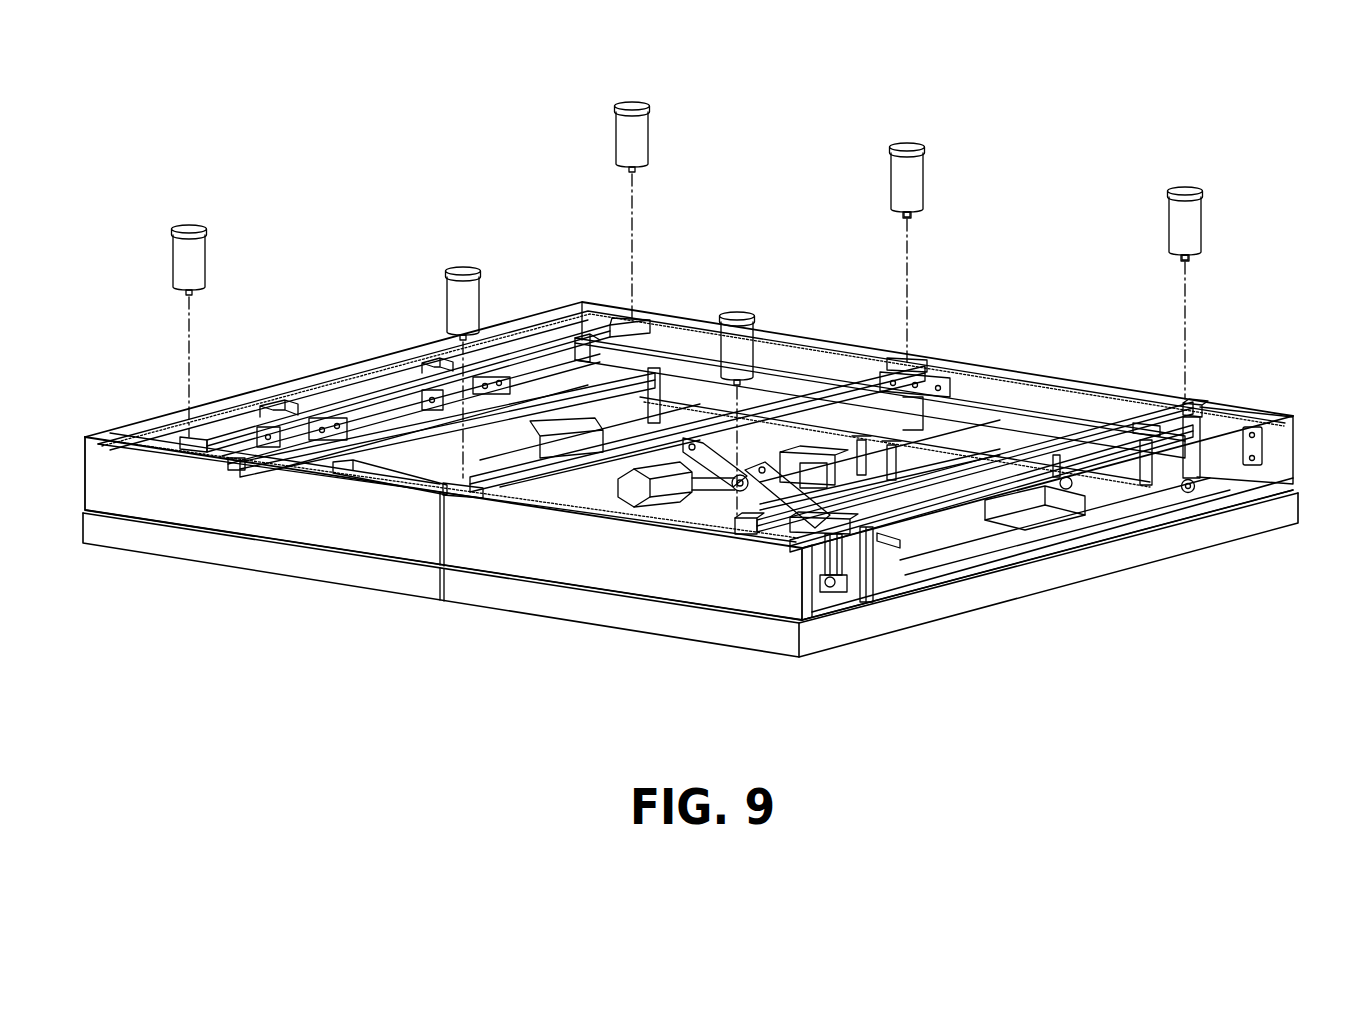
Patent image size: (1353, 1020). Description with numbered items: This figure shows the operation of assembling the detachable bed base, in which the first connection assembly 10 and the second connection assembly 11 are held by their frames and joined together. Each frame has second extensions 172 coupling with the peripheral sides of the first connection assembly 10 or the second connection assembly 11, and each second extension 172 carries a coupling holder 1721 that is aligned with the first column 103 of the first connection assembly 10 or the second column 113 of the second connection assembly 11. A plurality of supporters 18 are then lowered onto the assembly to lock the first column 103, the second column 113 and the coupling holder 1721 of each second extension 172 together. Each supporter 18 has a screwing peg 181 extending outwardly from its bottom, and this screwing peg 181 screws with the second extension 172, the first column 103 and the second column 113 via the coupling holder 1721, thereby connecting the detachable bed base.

The first connection assembly 10 is at (437, 455).
The first column 103 is at (814, 372).
The second connection assembly 11 is at (978, 533).
The second column 113 is at (867, 500).
The second extension 172 is at (996, 390).
The coupling holder 1721 is at (1197, 405).
The supporter 18 is at (627, 133).
The screwing peg 181 is at (903, 216).